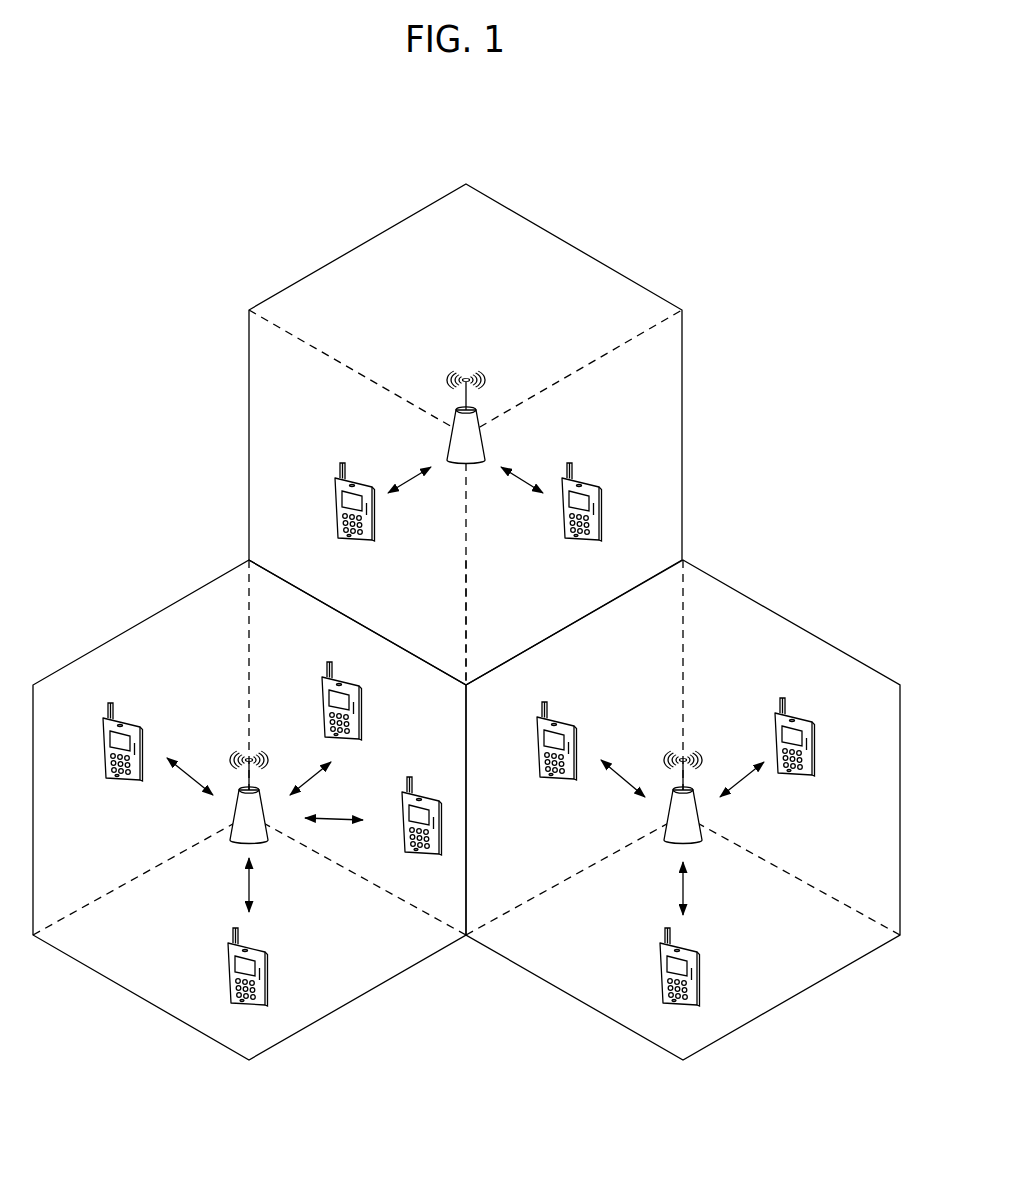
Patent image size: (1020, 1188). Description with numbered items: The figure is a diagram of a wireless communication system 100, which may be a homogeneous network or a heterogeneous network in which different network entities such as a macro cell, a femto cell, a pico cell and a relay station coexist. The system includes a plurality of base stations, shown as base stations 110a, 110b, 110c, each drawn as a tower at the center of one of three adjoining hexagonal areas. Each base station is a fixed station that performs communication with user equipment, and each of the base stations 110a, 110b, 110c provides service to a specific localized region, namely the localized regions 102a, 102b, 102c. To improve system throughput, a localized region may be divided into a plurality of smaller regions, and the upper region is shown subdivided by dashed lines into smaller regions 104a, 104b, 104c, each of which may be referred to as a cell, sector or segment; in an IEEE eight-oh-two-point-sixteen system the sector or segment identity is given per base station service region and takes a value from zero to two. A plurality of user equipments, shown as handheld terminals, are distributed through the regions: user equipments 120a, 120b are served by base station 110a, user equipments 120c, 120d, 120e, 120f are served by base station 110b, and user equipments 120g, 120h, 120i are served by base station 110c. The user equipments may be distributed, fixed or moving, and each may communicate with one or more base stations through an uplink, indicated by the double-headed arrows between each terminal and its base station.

The wireless communication system 100 is at (758, 236).
The specific localized region 102a is at (577, 247).
The specific localized region 102b is at (142, 620).
The specific localized region 102c is at (788, 621).
The smaller region 104a is at (486, 268).
The smaller region 104b is at (447, 606).
The smaller region 104c is at (555, 606).
The base station 110a is at (466, 372).
The base station 110b is at (270, 837).
The base station 110c is at (702, 838).
The user equipment 120a is at (335, 492).
The user equipment 120b is at (601, 497).
The user equipment 120c is at (128, 722).
The user equipment 120d is at (322, 690).
The user equipment 120e is at (422, 794).
The user equipment 120f is at (228, 965).
The user equipment 120g is at (555, 718).
The user equipment 120h is at (660, 970).
The user equipment 120i is at (812, 773).